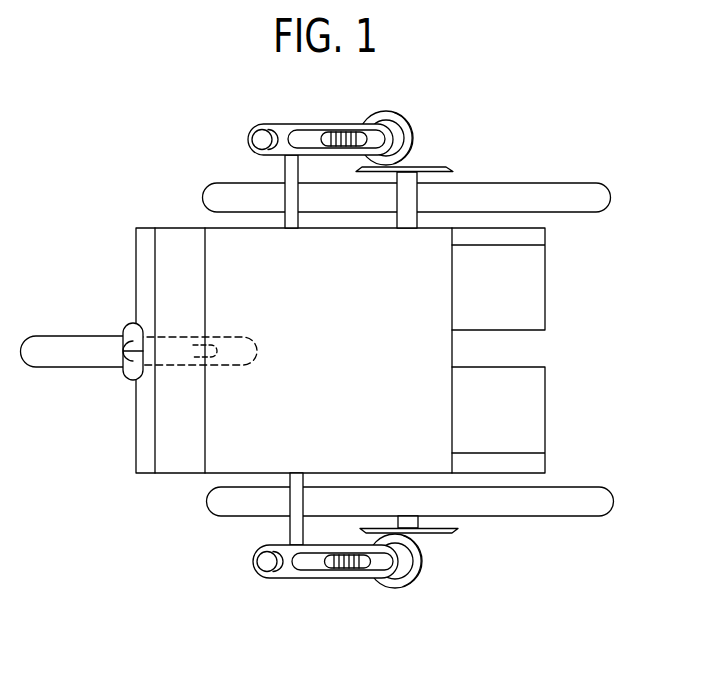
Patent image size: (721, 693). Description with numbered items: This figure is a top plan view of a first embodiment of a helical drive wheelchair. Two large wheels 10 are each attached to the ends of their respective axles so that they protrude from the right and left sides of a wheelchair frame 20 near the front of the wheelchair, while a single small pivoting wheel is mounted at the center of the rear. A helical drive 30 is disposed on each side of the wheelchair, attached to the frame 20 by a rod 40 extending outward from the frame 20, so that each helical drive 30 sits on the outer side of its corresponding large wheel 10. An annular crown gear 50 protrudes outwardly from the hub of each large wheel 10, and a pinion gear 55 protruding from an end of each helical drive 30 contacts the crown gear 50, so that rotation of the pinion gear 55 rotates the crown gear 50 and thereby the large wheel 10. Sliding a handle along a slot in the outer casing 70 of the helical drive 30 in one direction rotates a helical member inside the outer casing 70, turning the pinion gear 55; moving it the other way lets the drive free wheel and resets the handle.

The large wheel 10 is at (610, 195).
The wheelchair frame 20 is at (183, 474).
The helical drive 30 is at (298, 578).
The rod 40 is at (283, 172).
The annular crown gear 50 is at (448, 533).
The pinion gear 55 is at (420, 576).
The outer casing 70 is at (343, 579).